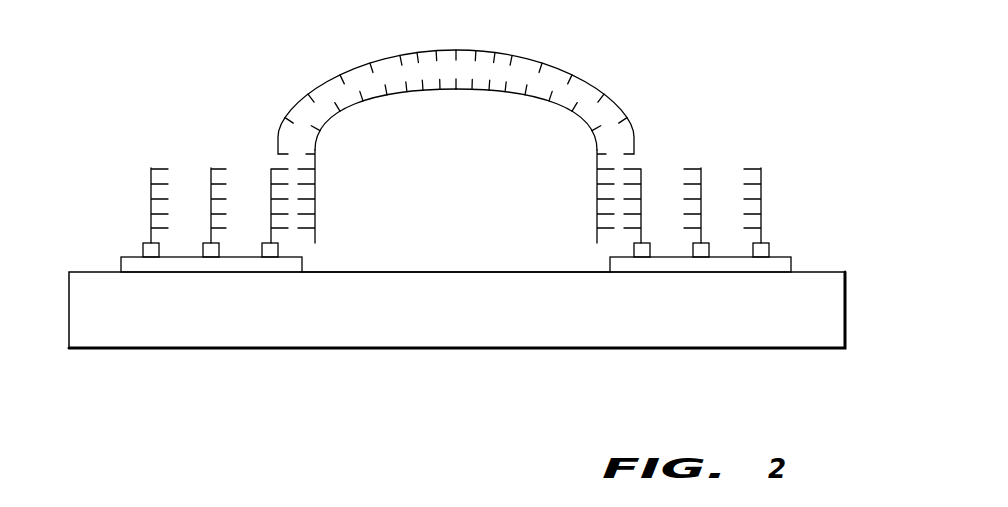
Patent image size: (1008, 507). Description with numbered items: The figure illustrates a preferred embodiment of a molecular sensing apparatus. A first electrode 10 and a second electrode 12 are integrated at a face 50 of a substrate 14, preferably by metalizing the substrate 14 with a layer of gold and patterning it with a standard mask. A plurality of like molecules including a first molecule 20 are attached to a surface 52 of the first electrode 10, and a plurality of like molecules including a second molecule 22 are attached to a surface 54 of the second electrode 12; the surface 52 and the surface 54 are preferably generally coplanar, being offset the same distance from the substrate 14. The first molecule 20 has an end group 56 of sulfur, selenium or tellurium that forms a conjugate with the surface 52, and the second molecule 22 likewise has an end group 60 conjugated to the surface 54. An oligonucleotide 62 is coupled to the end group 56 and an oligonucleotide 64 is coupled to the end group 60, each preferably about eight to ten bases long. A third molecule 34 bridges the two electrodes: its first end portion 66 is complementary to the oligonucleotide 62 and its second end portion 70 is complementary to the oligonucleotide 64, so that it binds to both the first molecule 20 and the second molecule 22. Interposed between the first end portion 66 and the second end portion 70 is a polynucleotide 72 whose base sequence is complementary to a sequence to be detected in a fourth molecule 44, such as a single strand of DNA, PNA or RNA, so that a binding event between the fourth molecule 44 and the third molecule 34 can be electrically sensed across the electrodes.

The first electrode 10 is at (121, 259).
The second electrode 12 is at (792, 263).
The substrate 14 is at (847, 304).
The first molecule 20 is at (268, 172).
The second molecule 22 is at (643, 174).
The third molecule 34 is at (366, 106).
The fourth molecule 44 is at (485, 51).
The face of the substrate 50 is at (432, 270).
The surface of the first electrode 52 is at (137, 257).
The surface of the second electrode 54 is at (778, 256).
The end group of the first molecule 56 is at (279, 248).
The end group of the second molecule 60 is at (634, 248).
The oligonucleotide of the first molecule 62 is at (301, 183).
The oligonucleotide of the second molecule 64 is at (610, 175).
The first end portion 66 is at (315, 187).
The second end portion 70 is at (597, 178).
The polynucleotide 72 is at (455, 115).